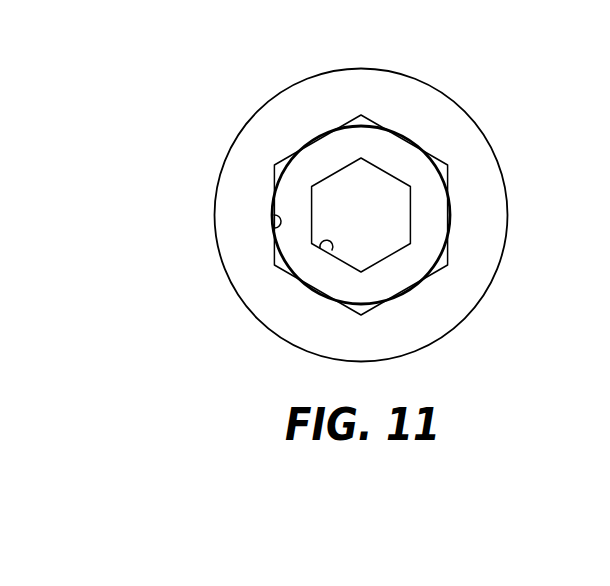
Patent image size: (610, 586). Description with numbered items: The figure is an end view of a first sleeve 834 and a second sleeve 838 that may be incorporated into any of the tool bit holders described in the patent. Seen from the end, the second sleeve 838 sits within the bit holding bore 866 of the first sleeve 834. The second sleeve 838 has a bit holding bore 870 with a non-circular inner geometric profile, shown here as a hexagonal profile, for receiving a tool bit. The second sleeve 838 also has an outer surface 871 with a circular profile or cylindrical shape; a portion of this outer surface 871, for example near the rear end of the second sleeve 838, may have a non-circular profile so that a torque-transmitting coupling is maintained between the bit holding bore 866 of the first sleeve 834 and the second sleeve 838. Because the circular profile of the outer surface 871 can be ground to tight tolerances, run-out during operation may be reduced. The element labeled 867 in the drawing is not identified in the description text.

The first sleeve 834 is at (450, 97).
The head flange 867 is at (328, 70).
The outer surface 871 is at (322, 295).
The bit holding bore 866 is at (275, 228).
The second sleeve 838 is at (432, 207).
The bit holding bore 870 is at (332, 250).